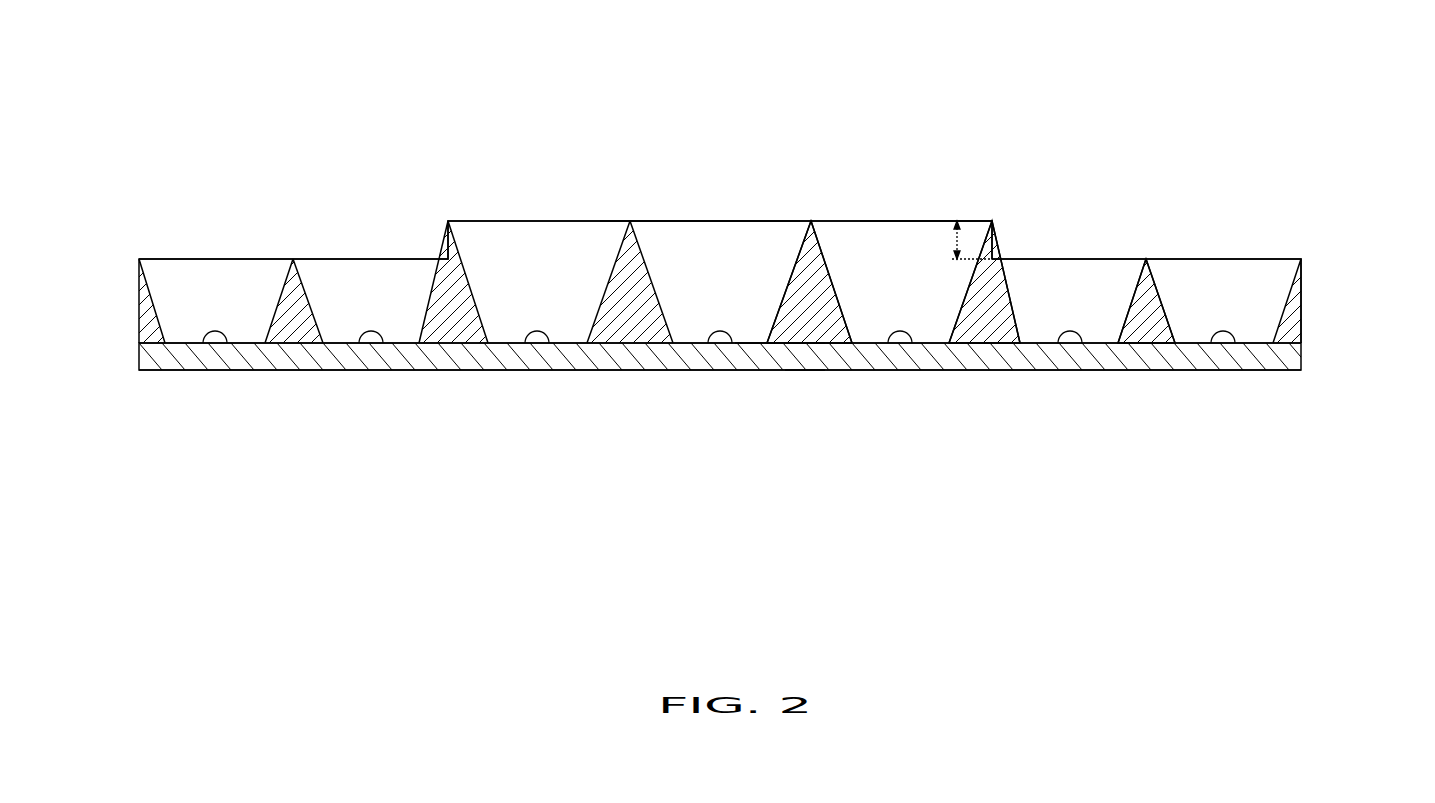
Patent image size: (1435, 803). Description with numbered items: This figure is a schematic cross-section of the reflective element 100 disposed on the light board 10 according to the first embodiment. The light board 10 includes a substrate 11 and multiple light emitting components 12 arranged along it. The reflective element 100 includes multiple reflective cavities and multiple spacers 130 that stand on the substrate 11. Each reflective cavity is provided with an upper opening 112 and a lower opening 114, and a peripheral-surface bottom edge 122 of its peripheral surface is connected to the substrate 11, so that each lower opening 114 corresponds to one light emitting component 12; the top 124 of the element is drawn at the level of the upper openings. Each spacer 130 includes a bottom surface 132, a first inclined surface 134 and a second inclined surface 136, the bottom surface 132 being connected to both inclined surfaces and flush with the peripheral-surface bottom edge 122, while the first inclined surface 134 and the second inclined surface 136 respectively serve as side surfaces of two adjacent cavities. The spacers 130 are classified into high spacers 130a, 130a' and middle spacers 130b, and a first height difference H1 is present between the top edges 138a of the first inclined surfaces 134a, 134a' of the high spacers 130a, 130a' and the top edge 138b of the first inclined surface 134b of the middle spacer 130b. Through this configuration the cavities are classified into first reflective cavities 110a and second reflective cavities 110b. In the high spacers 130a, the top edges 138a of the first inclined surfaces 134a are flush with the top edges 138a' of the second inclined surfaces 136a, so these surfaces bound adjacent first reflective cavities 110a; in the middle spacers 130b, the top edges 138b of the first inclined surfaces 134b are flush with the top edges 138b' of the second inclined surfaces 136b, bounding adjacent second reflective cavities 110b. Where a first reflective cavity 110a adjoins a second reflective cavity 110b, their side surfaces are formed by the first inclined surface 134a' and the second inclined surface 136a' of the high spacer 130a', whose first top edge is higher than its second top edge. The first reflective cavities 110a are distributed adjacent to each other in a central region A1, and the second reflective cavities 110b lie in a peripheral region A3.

The reflective element 100 is at (134, 288).
The light board 10 is at (769, 345).
The substrate 11 is at (1290, 357).
The light emitting component 12 is at (1232, 322).
The first reflective cavity 110a is at (890, 232).
The second reflective cavity 110b is at (1062, 270).
The upper opening 112 is at (698, 211).
The lower opening 114 is at (252, 371).
The peripheral-surface bottom edge 122 is at (753, 340).
The top surface 124 is at (198, 258).
The spacer 130 is at (1110, 454).
The high spacer 130a is at (847, 338).
The high spacer 130a' is at (985, 338).
The middle spacer 130b is at (1150, 332).
The bottom surface 132 is at (800, 340).
The first inclined surface 134 is at (625, 471).
The first inclined surface 134a is at (620, 346).
The first inclined surface 134a' is at (493, 346).
The first inclined surface 134b is at (312, 315).
The second inclined surface 136 is at (492, 149).
The second inclined surface 136a is at (532, 249).
The second inclined surface 136a' is at (396, 249).
The second inclined surface 136b is at (270, 300).
The top edge of first inclined surface 138a is at (873, 227).
The top edge of second inclined surface 138a' is at (931, 239).
The top edge of first inclined surface 138b is at (1114, 260).
The top edge of second inclined surface 138b' is at (1223, 260).
The first height difference H1 is at (958, 209).
The central region A1 is at (992, 76).
The peripheral region A3 is at (1302, 76).